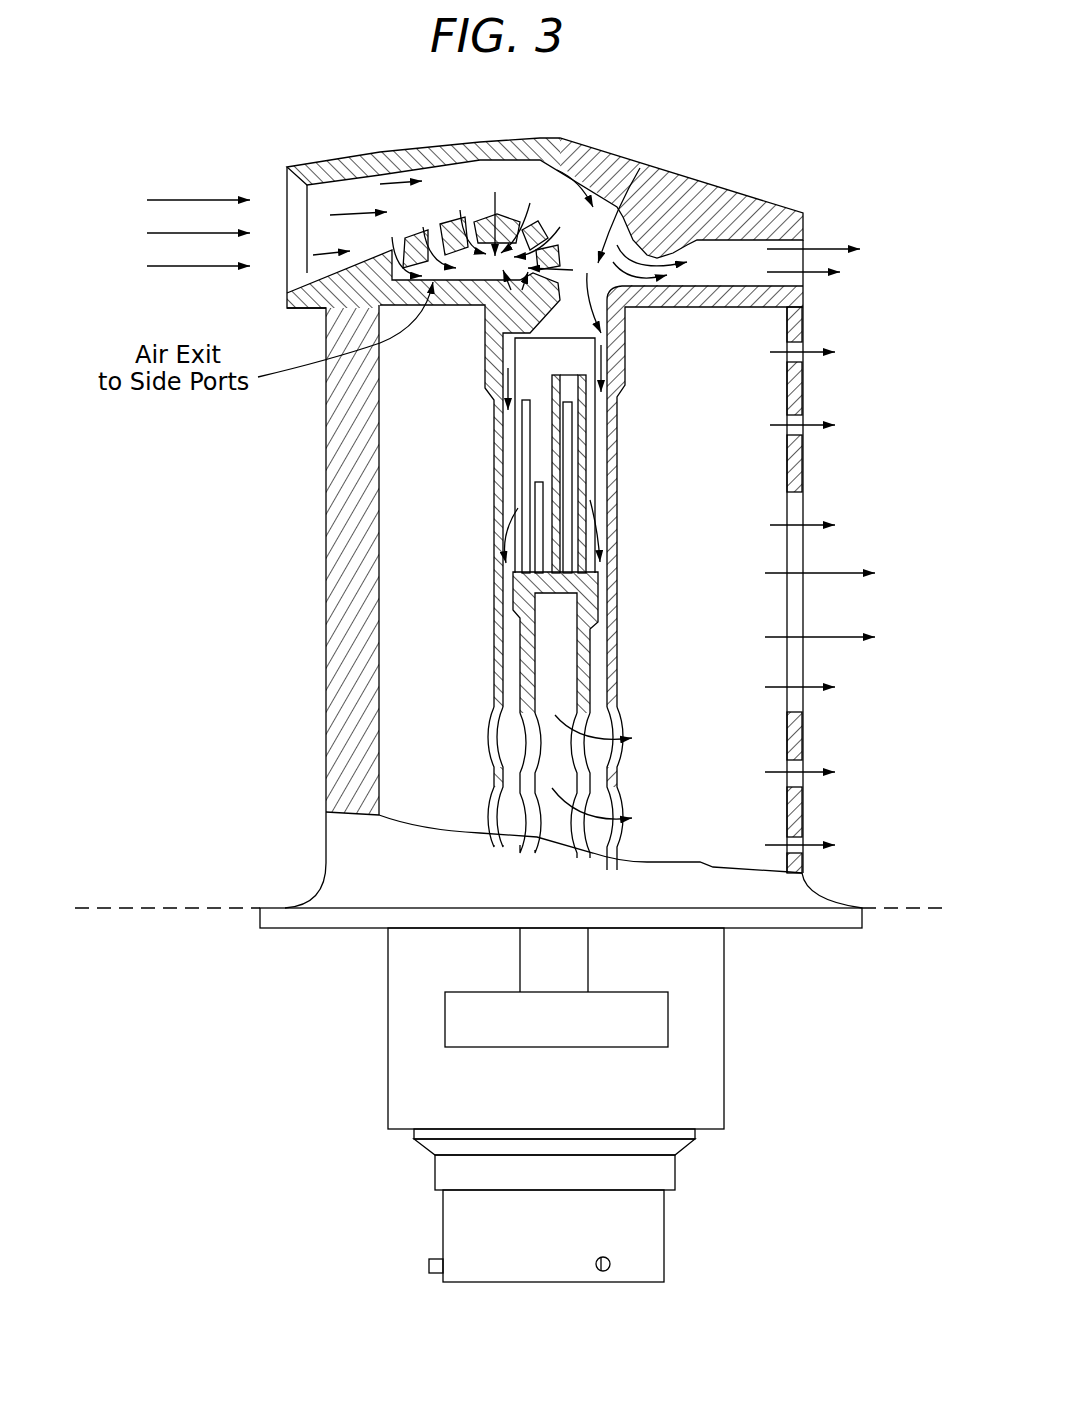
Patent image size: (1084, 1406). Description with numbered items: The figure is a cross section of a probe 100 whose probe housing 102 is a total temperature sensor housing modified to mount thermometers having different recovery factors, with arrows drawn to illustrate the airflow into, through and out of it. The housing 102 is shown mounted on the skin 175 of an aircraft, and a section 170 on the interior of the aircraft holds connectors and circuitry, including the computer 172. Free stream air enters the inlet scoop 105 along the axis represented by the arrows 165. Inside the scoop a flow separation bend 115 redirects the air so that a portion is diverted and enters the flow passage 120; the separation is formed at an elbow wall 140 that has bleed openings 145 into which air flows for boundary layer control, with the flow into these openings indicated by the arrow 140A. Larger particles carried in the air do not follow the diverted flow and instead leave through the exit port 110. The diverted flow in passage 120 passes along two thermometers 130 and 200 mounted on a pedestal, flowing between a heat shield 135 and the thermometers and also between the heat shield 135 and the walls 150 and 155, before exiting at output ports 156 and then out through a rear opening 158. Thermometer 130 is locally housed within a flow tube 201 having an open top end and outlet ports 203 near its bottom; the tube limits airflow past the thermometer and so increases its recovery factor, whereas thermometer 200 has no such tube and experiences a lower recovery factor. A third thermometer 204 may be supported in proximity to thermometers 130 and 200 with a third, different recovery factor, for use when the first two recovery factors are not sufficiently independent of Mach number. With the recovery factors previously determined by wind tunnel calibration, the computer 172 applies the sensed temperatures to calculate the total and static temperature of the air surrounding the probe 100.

The probe 100 is at (682, 126).
The probe housing 102 is at (326, 585).
The inlet scoop 105 is at (282, 187).
The exit port 110 is at (807, 236).
The flow separation bend 115 is at (499, 183).
The flow passage 120 is at (640, 170).
The thermometer 130 is at (572, 447).
The heat shield 135 is at (513, 358).
The elbow wall 140 is at (490, 213).
The port flow path 140A is at (495, 257).
The bleed openings 145 is at (435, 210).
The wall 150 is at (493, 347).
The wall 155 is at (643, 347).
The output ports 156 is at (595, 530).
The rear opening 158 is at (607, 727).
The airflow arrows 165 is at (157, 245).
The section for connectors and circuitry 170 is at (388, 1048).
The computer 172 is at (508, 1047).
The aircraft skin 175 is at (190, 915).
The thermometer 200 is at (522, 437).
The flow tube 201 is at (586, 417).
The outlet ports 203 is at (604, 540).
The third thermometer 204 is at (543, 477).